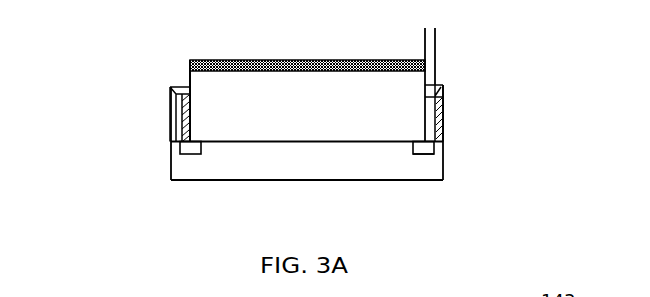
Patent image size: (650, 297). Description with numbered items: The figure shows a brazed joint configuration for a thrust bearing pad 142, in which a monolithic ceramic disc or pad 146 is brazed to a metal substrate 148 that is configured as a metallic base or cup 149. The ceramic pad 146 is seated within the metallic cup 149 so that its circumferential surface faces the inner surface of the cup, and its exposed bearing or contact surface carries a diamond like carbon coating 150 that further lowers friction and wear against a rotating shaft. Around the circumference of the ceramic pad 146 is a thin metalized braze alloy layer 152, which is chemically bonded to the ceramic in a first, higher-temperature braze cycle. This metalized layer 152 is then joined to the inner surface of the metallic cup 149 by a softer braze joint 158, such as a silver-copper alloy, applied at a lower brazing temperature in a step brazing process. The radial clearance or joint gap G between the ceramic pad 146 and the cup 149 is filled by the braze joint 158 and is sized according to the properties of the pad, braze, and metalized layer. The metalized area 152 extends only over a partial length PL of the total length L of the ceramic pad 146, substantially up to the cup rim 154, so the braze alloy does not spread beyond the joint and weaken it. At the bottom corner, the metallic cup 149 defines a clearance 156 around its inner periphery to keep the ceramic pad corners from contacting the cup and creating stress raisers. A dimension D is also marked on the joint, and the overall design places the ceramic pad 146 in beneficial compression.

The thrust bearing pad 142 is at (130, 98).
The ceramic pad 146 is at (320, 112).
The metal substrate 148 is at (280, 187).
The metallic cup 149 is at (197, 168).
The diamond like carbon coating 150 is at (190, 60).
The braze alloy layer 152 is at (191, 110).
The cup rim 154 is at (443, 93).
The clearance 156 is at (427, 155).
The braze joint 158 is at (181, 129).
The radial clearance G is at (387, 47).
The length of the ceramic pad L is at (212, 141).
The depth dimension D is at (158, 97).
The partial length PL is at (410, 95).